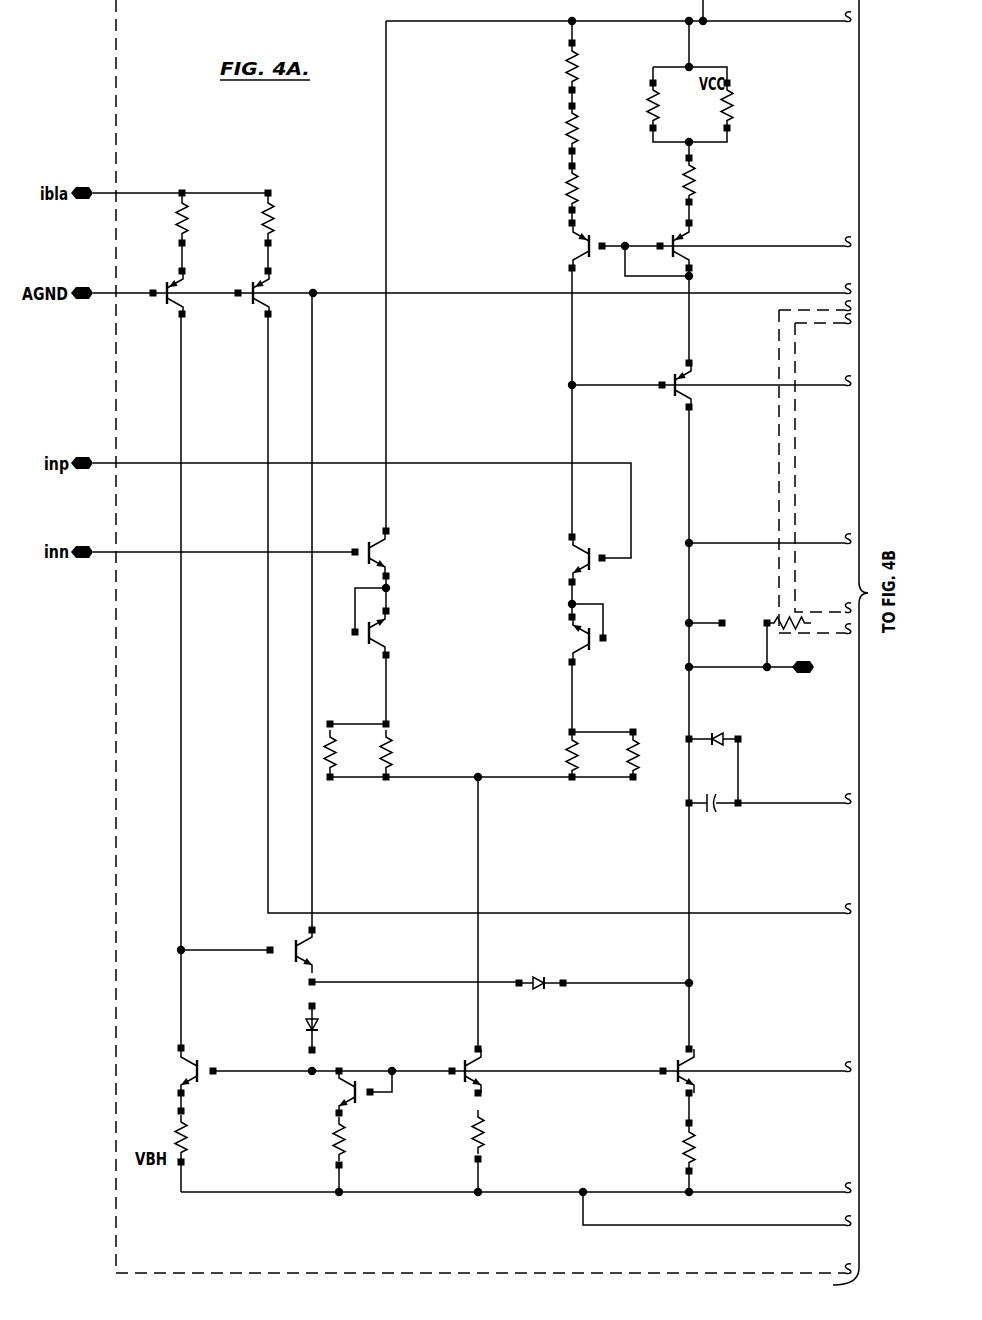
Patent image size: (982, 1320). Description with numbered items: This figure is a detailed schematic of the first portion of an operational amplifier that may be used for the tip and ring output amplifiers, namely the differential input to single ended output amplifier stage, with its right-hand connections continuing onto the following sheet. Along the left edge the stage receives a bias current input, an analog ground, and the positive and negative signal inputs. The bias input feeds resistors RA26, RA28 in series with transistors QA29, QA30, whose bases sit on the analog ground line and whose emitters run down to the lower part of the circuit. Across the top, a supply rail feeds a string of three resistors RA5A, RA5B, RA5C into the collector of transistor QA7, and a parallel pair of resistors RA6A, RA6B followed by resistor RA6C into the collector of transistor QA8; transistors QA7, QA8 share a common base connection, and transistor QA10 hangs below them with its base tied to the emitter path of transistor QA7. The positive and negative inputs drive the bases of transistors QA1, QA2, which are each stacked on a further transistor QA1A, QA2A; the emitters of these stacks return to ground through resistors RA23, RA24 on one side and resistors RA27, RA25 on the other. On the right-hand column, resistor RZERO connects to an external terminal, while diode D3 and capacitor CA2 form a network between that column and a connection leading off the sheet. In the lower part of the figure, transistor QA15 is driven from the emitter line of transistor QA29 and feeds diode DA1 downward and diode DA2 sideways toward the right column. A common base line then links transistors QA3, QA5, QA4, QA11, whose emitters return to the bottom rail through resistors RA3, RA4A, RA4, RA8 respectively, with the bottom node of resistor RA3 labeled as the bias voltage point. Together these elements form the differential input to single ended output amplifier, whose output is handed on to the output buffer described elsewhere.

The resistor RA26 is at (203, 230).
The resistor RA28 is at (290, 228).
The transistor QA29 is at (198, 292).
The transistor QA30 is at (286, 292).
The resistor RA5A is at (596, 65).
The resistor RA5B is at (595, 125).
The resistor RA5C is at (595, 186).
The resistor RA6A is at (670, 102).
The resistor RA6B is at (731, 106).
The resistor RA6C is at (712, 179).
The transistor QA7 is at (566, 243).
The transistor QA8 is at (695, 246).
The transistor QA10 is at (701, 383).
The transistor QA1 is at (389, 554).
The transistor QA1A is at (396, 633).
The transistor QA2 is at (568, 558).
The transistor QA2A is at (566, 640).
The resistor RA23 is at (309, 748).
The resistor RA24 is at (408, 748).
The resistor RA27 is at (551, 752).
The resistor RA25 is at (636, 743).
The resistor RZERO is at (750, 642).
The diode D3 is at (714, 756).
The capacitor CA2 is at (714, 788).
The transistor QA15 is at (314, 956).
The diode DA1 is at (329, 1027).
The diode DA2 is at (541, 966).
The transistor QA3 is at (178, 1065).
The resistor RA3 is at (198, 1129).
The transistor QA5 is at (338, 1092).
The resistor RA4A is at (366, 1154).
The transistor QA4 is at (488, 1070).
The resistor RA4 is at (456, 1145).
The transistor QA11 is at (701, 1070).
The resistor RA8 is at (709, 1142).